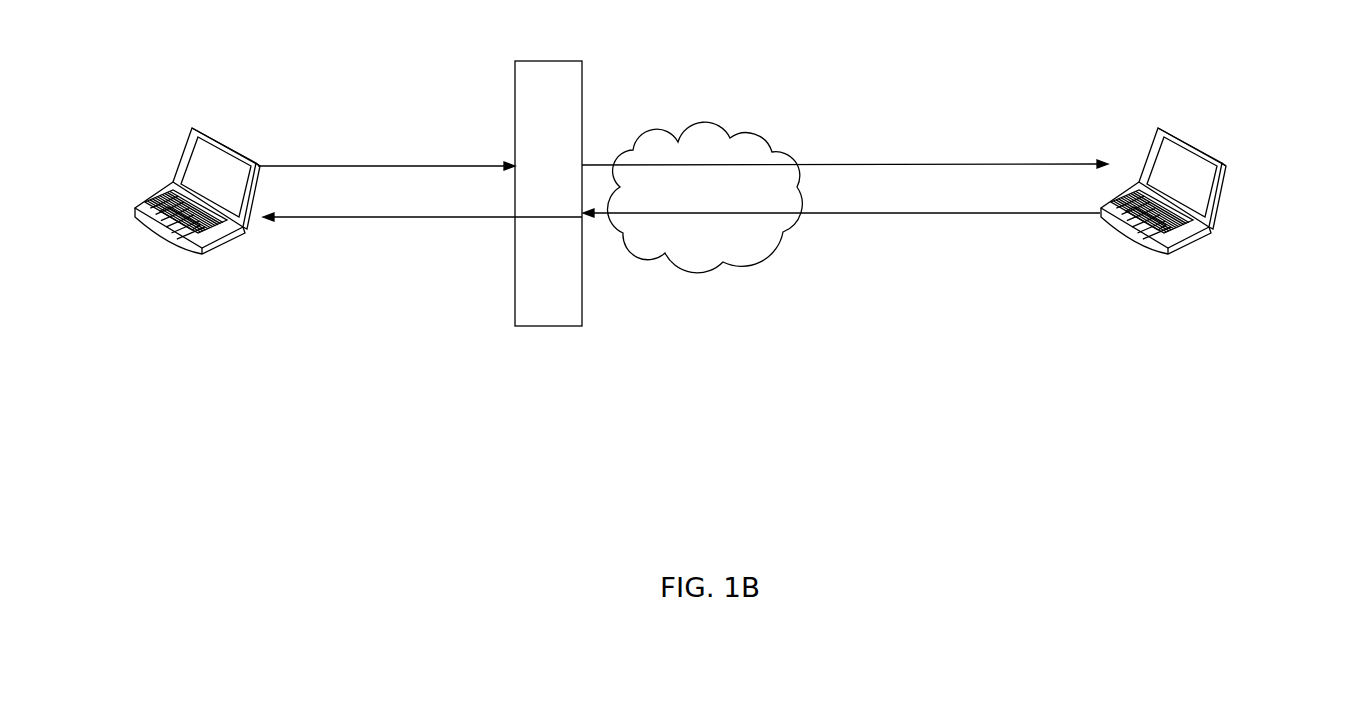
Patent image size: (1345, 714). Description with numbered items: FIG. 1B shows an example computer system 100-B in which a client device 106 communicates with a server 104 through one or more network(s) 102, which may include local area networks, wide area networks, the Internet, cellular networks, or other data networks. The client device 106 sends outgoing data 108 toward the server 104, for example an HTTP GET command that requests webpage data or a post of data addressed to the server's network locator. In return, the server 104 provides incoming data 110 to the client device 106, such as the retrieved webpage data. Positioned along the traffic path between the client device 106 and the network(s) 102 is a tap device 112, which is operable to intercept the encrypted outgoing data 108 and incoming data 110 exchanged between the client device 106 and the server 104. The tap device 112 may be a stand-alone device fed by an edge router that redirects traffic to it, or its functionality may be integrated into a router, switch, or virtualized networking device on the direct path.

The computer system 100-B is at (718, 301).
The network(s) 102 is at (760, 133).
The server 104 is at (1197, 143).
The client device 106 is at (208, 128).
The outgoing data 108 is at (462, 161).
The incoming data 110 is at (462, 245).
The tap device 112 is at (665, 381).